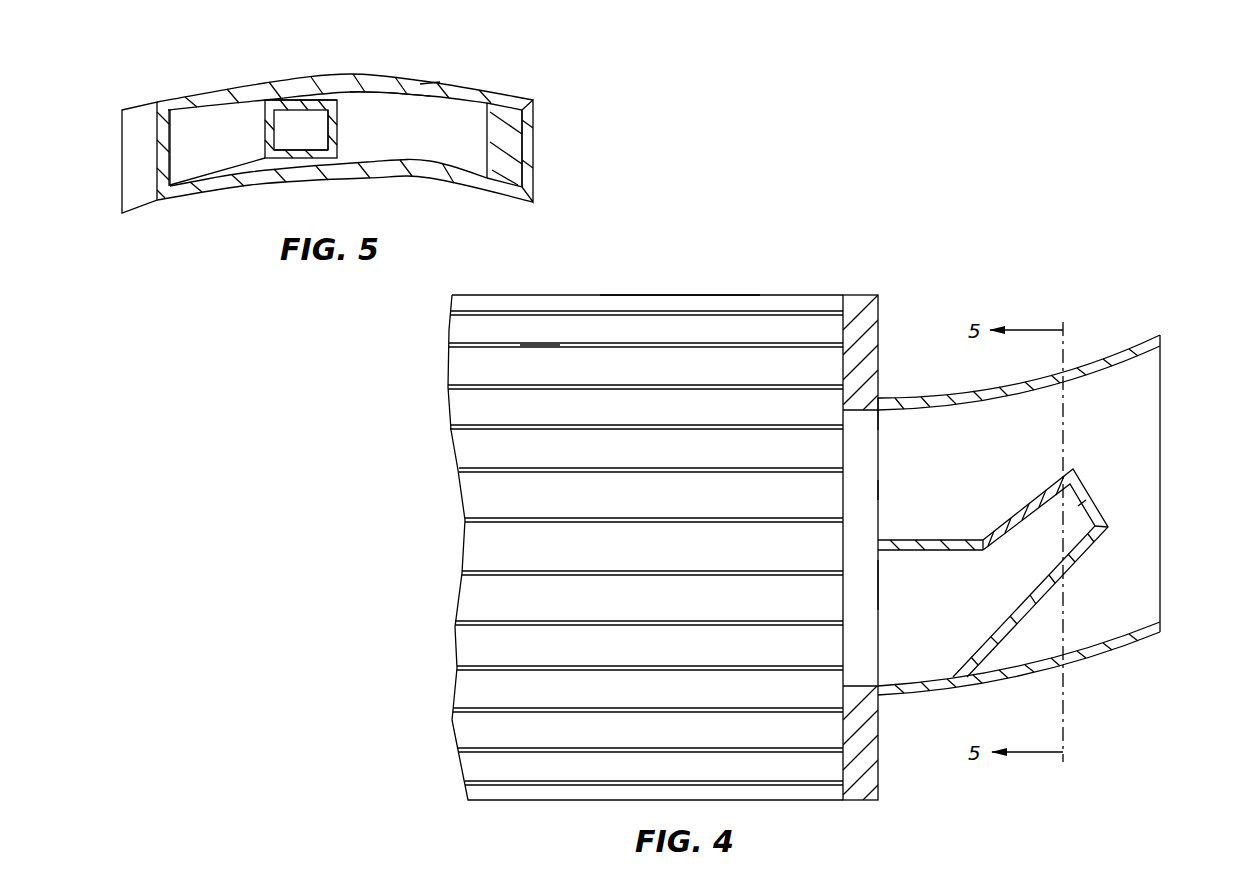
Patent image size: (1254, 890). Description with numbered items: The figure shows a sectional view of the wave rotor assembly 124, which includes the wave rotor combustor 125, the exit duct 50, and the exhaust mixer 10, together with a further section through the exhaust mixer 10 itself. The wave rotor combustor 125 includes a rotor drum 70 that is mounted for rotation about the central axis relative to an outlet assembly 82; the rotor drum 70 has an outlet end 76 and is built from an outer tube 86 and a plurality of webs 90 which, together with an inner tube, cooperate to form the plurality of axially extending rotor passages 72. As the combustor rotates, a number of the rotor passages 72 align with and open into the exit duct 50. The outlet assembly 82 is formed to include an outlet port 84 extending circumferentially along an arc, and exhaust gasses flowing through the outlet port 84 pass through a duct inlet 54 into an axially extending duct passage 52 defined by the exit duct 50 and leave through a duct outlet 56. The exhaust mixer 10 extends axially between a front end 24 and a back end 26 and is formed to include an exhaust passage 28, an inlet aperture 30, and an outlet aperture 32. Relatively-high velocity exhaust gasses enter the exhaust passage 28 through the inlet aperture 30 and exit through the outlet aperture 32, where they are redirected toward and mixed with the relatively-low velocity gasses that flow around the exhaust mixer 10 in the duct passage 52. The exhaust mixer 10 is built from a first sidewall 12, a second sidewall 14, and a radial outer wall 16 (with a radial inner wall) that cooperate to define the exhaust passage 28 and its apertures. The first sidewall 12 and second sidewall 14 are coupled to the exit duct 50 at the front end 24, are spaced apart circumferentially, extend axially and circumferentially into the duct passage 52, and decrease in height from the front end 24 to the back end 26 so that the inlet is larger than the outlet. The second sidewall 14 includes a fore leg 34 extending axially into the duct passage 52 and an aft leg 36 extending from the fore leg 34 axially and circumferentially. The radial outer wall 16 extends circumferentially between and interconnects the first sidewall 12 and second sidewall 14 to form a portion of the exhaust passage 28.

In FIG. 5, the exhaust mixer 10 is at (273, 100).
In FIG. 4, the exhaust mixer 10 is at (1103, 547).
In FIG. 5, the first sidewall 12 is at (213, 137).
In FIG. 4, the first sidewall 12 is at (1013, 635).
In FIG. 5, the second sidewall 14 is at (320, 123).
In FIG. 4, the second sidewall 14 is at (982, 538).
In FIG. 5, the radial outer wall 16 is at (290, 98).
In FIG. 4, the front end 24 is at (879, 573).
In FIG. 4, the back end 26 is at (1110, 523).
In FIG. 5, the exhaust passage 28 is at (293, 139).
In FIG. 4, the exhaust passage 28 is at (952, 612).
In FIG. 4, the inlet aperture 30 is at (878, 597).
In FIG. 5, the outlet aperture 32 is at (314, 133).
In FIG. 4, the outlet aperture 32 is at (1083, 493).
In FIG. 4, the fore leg 34 is at (923, 540).
In FIG. 4, the aft leg 36 is at (1028, 503).
In FIG. 5, the exit duct 50 is at (498, 90).
In FIG. 4, the exit duct 50 is at (1128, 346).
In FIG. 5, the duct passage 52 is at (441, 150).
In FIG. 4, the duct passage 52 is at (937, 434).
In FIG. 4, the duct inlet 54 is at (877, 493).
In FIG. 5, the duct outlet 56 is at (504, 145).
In FIG. 4, the duct outlet 56 is at (1164, 405).
In FIG. 4, the rotor drum 70 is at (497, 803).
In FIG. 4, the rotor passages 72 is at (493, 498).
In FIG. 4, the outlet end 76 is at (892, 308).
In FIG. 4, the outlet assembly 82 is at (860, 293).
In FIG. 4, the outlet port 84 is at (853, 425).
In FIG. 4, the outer tube 86 is at (641, 295).
In FIG. 4, the webs 90 is at (533, 345).
In FIG. 5, the wave rotor assembly 124 is at (449, 42).
In FIG. 4, the wave rotor assembly 124 is at (887, 237).
In FIG. 4, the wave rotor combustor 125 is at (714, 278).